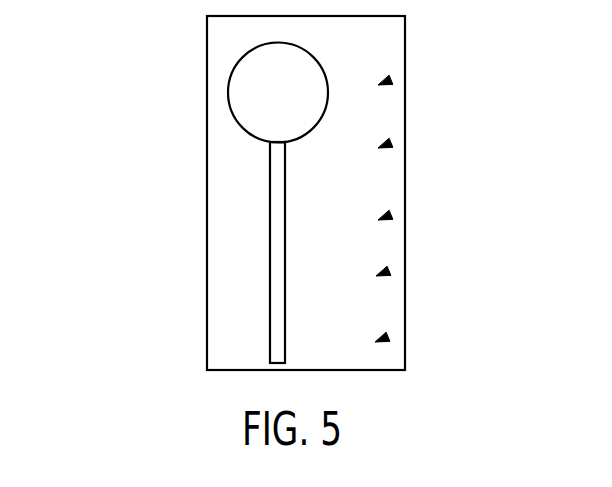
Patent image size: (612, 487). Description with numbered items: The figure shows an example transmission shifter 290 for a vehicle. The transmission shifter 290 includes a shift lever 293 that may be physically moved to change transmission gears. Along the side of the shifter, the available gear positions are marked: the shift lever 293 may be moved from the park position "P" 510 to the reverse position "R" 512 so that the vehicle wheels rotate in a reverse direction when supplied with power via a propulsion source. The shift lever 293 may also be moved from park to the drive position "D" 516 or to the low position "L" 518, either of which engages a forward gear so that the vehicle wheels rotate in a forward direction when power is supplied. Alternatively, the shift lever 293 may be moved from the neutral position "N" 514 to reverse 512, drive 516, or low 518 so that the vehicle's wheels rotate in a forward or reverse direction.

The transmission shifter 290 is at (207, 222).
The shift lever 293 is at (250, 87).
The park position "P" 510 is at (391, 80).
The reverse position "R" 512 is at (391, 143).
The neutral position "N" 514 is at (391, 215).
The drive position "D" 516 is at (389, 271).
The low position "L" 518 is at (388, 337).